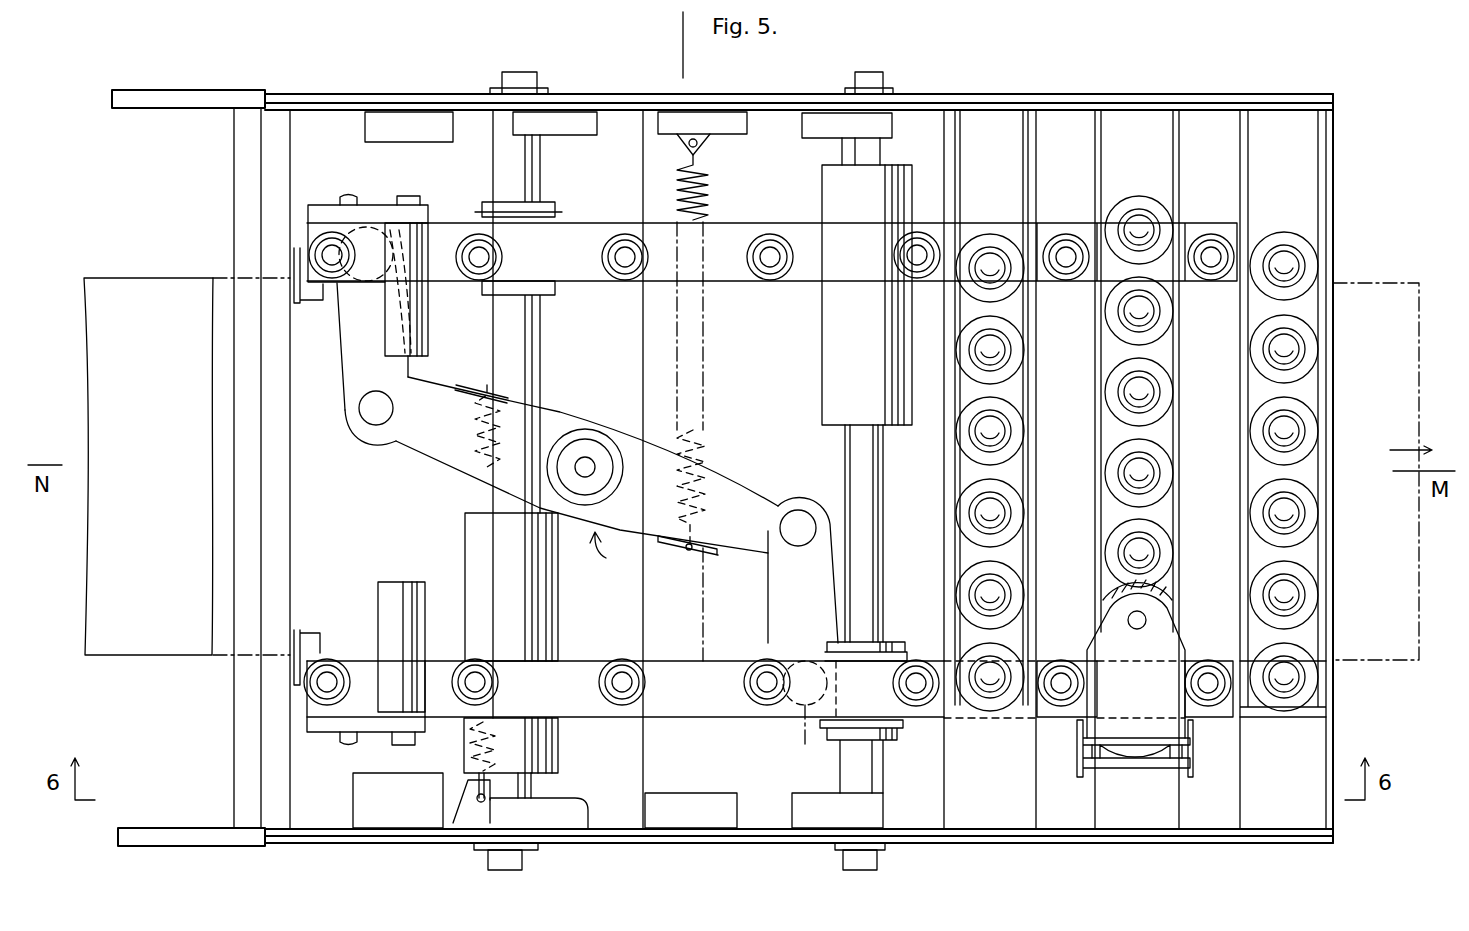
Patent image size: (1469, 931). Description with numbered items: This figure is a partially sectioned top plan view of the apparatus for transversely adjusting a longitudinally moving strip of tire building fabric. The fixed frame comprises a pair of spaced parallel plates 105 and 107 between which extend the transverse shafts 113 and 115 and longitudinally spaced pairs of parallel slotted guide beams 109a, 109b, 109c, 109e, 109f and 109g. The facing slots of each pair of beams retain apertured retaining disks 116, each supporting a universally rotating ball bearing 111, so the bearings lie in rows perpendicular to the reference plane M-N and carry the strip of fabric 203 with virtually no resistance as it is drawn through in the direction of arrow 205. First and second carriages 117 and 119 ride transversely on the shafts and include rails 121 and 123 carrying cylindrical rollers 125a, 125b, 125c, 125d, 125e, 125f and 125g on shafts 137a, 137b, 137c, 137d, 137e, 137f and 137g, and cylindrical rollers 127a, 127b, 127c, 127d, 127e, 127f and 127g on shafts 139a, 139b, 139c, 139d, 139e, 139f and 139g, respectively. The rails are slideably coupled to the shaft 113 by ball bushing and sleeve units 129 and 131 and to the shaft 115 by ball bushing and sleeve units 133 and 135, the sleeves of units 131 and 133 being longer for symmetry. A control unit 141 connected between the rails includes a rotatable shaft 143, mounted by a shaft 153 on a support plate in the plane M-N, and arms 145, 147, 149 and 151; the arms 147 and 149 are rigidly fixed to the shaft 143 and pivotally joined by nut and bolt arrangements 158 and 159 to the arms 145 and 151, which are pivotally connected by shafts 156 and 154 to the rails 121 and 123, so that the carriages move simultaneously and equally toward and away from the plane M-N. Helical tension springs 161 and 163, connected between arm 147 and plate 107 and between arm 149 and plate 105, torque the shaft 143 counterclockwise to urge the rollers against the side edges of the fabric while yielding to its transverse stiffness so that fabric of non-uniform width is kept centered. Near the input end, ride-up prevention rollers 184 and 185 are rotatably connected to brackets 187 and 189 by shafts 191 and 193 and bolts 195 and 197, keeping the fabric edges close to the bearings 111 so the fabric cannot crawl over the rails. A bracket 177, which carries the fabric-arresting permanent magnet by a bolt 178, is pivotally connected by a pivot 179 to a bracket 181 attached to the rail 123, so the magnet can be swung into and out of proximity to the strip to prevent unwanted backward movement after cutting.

The plate 105 is at (658, 96).
The plate 107 is at (697, 844).
The slotted guide beams 109a is at (446, 112).
The slotted guide beams 109b is at (592, 112).
The slotted guide beams 109c is at (745, 112).
The slotted guide beams 109e is at (1030, 120).
The slotted guide beams 109f is at (1178, 118).
The slotted guide beams 109g is at (1326, 120).
The universally rotating ball bearings 111 is at (1140, 222).
The shaft 113 is at (538, 334).
The shaft 115 is at (845, 448).
The apertured retaining disk 116 is at (1312, 258).
The first carriage 117 is at (223, 200).
The second carriage 119 is at (197, 700).
The rail 121 is at (573, 224).
The rail 123 is at (565, 708).
The cylindrical roller 125a is at (330, 250).
The cylindrical roller 125b is at (479, 257).
The cylindrical roller 125c is at (620, 242).
The cylindrical roller 125d is at (768, 242).
The cylindrical roller 125e is at (900, 250).
The cylindrical roller 125f is at (1065, 242).
The cylindrical roller 125g is at (1211, 242).
The cylindrical roller 127a is at (326, 702).
The cylindrical roller 127b is at (468, 676).
The cylindrical roller 127c is at (622, 702).
The cylindrical roller 127d is at (765, 702).
The cylindrical roller 127e is at (917, 702).
The cylindrical roller 127f is at (1060, 702).
The cylindrical roller 127g is at (1209, 702).
The ball bushing and sleeve unit 129 is at (495, 322).
The ball bushing and sleeve unit 131 is at (558, 590).
The ball bushing and sleeve unit 133 is at (836, 345).
The ball bushing and sleeve unit 135 is at (890, 637).
The shaft 137a is at (331, 262).
The shaft 137b is at (478, 264).
The shaft 137c is at (623, 265).
The shaft 137d is at (771, 265).
The shaft 137e is at (905, 260).
The shaft 137f is at (1065, 265).
The shaft 137g is at (1212, 265).
The shaft 139a is at (330, 678).
The shaft 139b is at (490, 682).
The shaft 139c is at (622, 664).
The shaft 139d is at (763, 676).
The shaft 139e is at (915, 676).
The shaft 139f is at (1060, 668).
The shaft 139g is at (1208, 668).
The control unit 141 is at (616, 548).
The rotatable shaft 143 is at (566, 430).
The arm 145 is at (343, 366).
The arm 147 is at (410, 440).
The arm 149 is at (737, 483).
The arm 151 is at (770, 576).
The shaft 153 is at (590, 460).
The shaft 154 is at (805, 706).
The shaft 156 is at (378, 205).
The nut and bolt arrangement 158 is at (368, 408).
The nut and bolt arrangement 159 is at (798, 510).
The helical tension spring 161 is at (460, 470).
The helical tension spring 163 is at (710, 452).
The bracket 177 is at (1168, 602).
The bolt 178 is at (1136, 630).
The pivot 179 is at (1170, 765).
The bracket 181 is at (1165, 770).
The cylindrical roller 184 is at (420, 350).
The cylindrical roller 185 is at (398, 582).
The bracket 187 is at (372, 208).
The bracket 189 is at (368, 732).
The shaft 191 is at (415, 222).
The shaft 193 is at (432, 716).
The bolt 195 is at (410, 196).
The bolt 197 is at (395, 736).
The strip of fabric 203 is at (152, 292).
The arrow 205 is at (1427, 434).